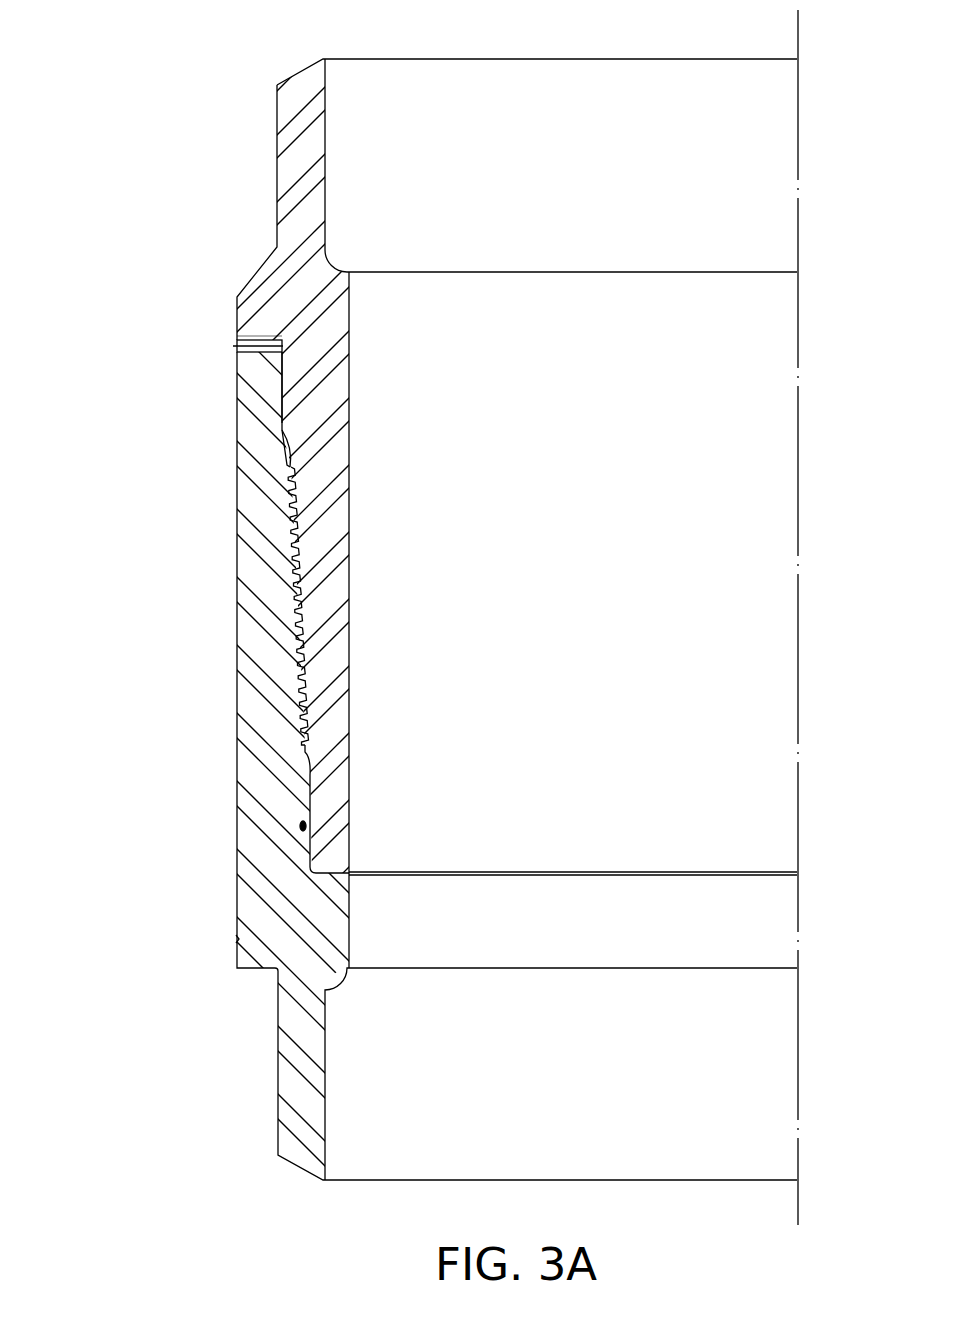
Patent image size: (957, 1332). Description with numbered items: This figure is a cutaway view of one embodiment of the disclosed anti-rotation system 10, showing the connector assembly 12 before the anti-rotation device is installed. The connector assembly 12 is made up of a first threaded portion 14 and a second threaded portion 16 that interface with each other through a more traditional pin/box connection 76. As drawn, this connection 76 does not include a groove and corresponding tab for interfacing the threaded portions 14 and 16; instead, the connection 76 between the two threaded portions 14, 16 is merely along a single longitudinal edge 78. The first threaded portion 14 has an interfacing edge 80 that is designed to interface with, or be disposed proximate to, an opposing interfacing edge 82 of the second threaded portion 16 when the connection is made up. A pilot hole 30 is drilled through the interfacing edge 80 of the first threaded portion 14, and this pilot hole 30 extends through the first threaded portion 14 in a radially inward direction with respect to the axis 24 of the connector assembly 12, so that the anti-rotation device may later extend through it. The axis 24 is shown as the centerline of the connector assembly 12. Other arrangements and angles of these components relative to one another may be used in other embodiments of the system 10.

The anti-rotation system 10 is at (108, 73).
The connector assembly 12 is at (167, 240).
The first threaded portion 14 is at (290, 165).
The second threaded portion 16 is at (252, 493).
The axis 24 is at (798, 340).
The pilot hole 30 is at (238, 332).
The pin/box connection 76 is at (318, 510).
The single longitudinal edge 78 is at (282, 380).
The interfacing edge 80 is at (272, 340).
The opposing interfacing edge 82 is at (235, 358).